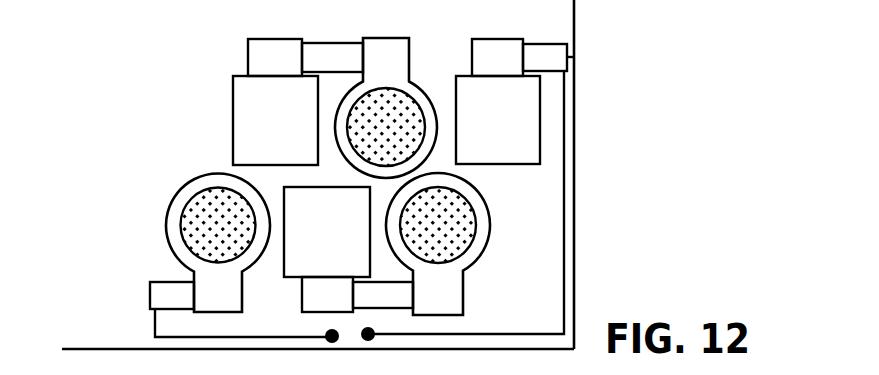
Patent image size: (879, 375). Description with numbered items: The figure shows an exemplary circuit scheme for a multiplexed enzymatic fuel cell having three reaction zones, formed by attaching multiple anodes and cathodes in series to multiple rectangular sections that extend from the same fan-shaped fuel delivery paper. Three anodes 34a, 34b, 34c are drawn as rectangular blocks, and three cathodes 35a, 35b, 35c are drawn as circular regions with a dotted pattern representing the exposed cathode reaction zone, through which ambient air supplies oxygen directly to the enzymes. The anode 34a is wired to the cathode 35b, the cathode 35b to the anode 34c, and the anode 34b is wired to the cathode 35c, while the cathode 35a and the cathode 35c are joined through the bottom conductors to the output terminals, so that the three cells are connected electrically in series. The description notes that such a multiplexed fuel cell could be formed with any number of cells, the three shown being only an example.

The anode 34a is at (272, 53).
The anode 34b is at (291, 265).
The anode 34c is at (489, 53).
The cathode 35a is at (173, 221).
The cathode 35b is at (419, 93).
The cathode 35c is at (483, 217).